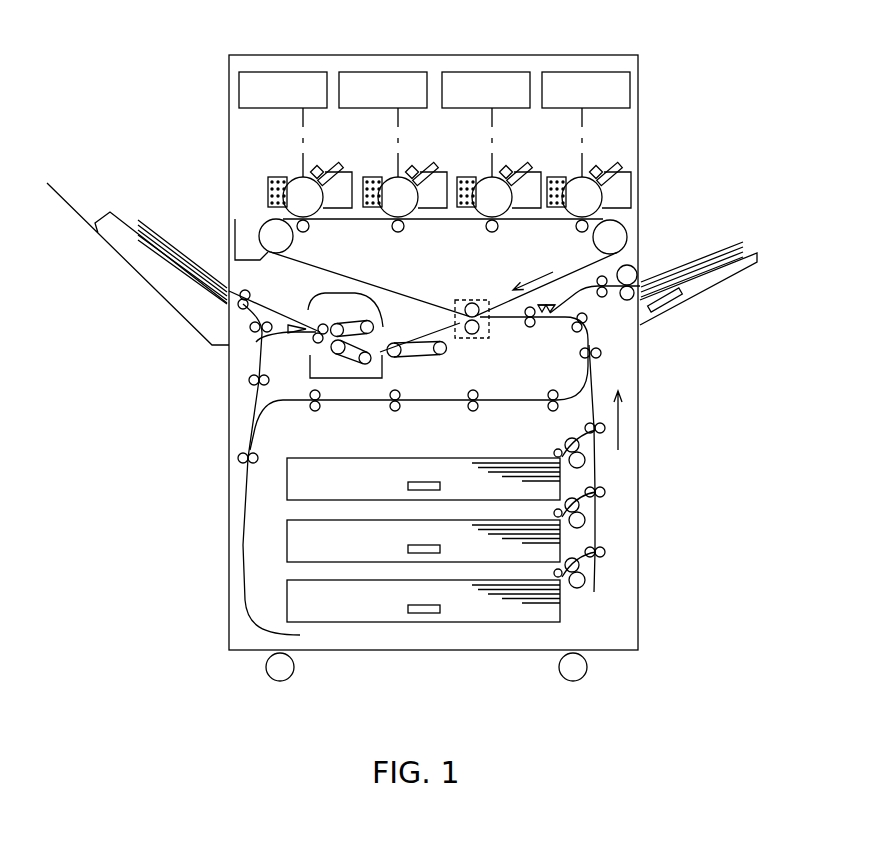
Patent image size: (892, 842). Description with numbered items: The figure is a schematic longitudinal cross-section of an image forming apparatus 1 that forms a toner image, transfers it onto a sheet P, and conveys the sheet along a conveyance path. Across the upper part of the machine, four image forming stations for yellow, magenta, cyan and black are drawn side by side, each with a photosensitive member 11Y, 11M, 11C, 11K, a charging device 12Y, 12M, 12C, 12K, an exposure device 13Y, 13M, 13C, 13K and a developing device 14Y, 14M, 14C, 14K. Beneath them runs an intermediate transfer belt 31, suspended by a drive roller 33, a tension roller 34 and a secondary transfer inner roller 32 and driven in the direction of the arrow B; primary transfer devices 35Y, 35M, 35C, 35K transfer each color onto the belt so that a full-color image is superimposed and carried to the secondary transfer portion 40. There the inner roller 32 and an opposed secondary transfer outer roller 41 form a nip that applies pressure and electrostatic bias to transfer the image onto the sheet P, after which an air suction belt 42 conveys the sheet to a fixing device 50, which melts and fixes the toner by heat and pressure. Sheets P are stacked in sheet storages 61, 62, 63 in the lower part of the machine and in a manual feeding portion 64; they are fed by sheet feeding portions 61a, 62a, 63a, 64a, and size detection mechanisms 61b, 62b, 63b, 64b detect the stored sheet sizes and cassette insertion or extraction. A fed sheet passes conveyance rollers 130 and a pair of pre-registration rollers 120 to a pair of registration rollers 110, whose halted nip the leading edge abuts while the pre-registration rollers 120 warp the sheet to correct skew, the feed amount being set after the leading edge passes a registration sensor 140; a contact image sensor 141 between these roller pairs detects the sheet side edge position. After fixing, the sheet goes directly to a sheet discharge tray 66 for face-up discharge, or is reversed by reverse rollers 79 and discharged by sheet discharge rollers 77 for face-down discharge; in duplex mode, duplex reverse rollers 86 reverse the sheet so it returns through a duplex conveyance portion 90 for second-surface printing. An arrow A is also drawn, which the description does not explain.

The image forming apparatus 1 is at (434, 56).
The photosensitive member 11Y is at (317, 194).
The photosensitive member 11M is at (412, 194).
The photosensitive member 11C is at (506, 194).
The photosensitive member 11K is at (596, 194).
The charging device 12Y is at (317, 163).
The charging device 12M is at (412, 163).
The charging device 12C is at (506, 163).
The charging device 12K is at (596, 163).
The exposure device 13Y is at (283, 124).
The exposure device 13M is at (383, 124).
The exposure device 13C is at (486, 124).
The exposure device 13K is at (586, 124).
The developing device 14Y is at (277, 176).
The developing device 14M is at (372, 176).
The developing device 14C is at (466, 176).
The developing device 14K is at (556, 176).
The intermediate transfer belt 31 is at (492, 301).
The secondary transfer inner roller 32 is at (465, 302).
The drive roller 33 is at (264, 239).
The tension roller 34 is at (610, 237).
The primary transfer device 35Y is at (309, 231).
The primary transfer device 35M is at (398, 232).
The primary transfer device 35C is at (486, 229).
The primary transfer device 35K is at (576, 229).
The secondary transfer portion 40 is at (454, 321).
The secondary transfer outer roller 41 is at (480, 334).
The air suction belt 42 is at (418, 357).
The fixing device 50 is at (319, 335).
The sheet storage 61 is at (287, 460).
The sheet storage 62 is at (287, 522).
The sheet storage 63 is at (287, 582).
The sheet feeding portion 61a is at (555, 453).
The sheet feeding portion 62a is at (566, 530).
The sheet feeding portion 63a is at (566, 590).
The size detection mechanism 61b is at (407, 486).
The size detection mechanism 62b is at (407, 549).
The size detection mechanism 63b is at (407, 609).
The manual feeding portion 64 is at (713, 290).
The sheet feeding portion 64a is at (635, 268).
The size detection mechanism 64b is at (678, 303).
The sheet discharge tray 66 is at (152, 288).
The sheet discharge rollers 77 is at (243, 291).
The reverse rollers 79 is at (256, 385).
The duplex reverse rollers 86 is at (240, 458).
The duplex conveyance portion 90 is at (410, 406).
The pair of registration rollers 110 is at (527, 323).
The pair of pre-registration rollers 120 is at (587, 325).
The conveyance rollers 130 is at (602, 356).
The registration sensor 140 is at (550, 306).
The contact image sensor 141 is at (535, 325).
The sheet P is at (140, 221).
The sheet conveyance direction A is at (619, 437).
The arrow B is at (533, 277).